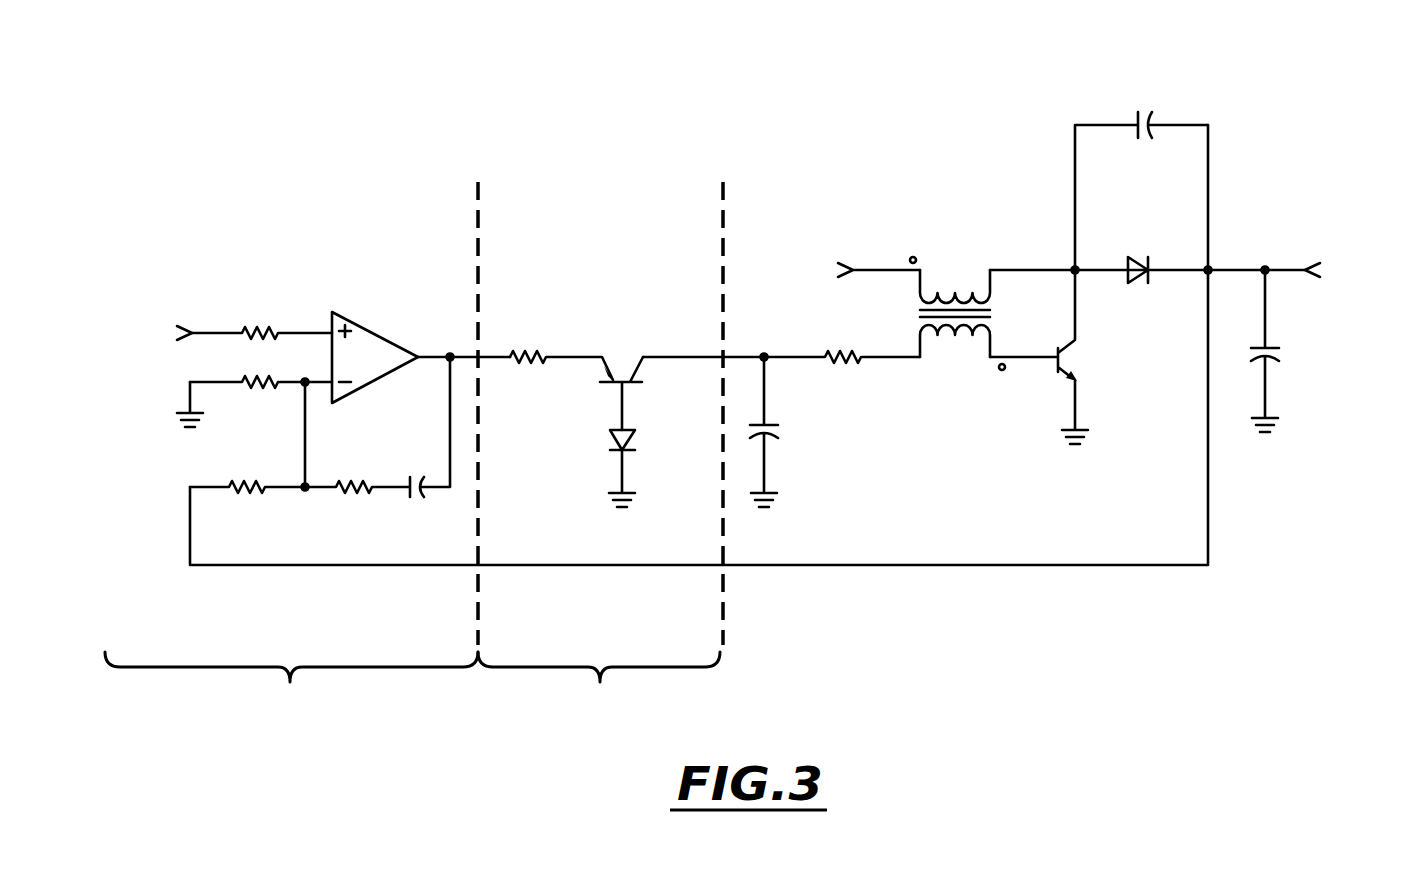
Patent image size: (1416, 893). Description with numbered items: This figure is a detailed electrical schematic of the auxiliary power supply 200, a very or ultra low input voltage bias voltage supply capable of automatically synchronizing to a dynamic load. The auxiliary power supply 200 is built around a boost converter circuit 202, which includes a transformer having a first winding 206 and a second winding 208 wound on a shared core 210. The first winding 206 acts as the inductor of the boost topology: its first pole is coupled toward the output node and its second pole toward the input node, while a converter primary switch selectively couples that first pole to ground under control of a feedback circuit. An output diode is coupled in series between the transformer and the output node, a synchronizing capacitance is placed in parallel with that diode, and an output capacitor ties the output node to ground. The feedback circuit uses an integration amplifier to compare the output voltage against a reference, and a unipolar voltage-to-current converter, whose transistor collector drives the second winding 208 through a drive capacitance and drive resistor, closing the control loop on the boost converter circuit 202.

The auxiliary power supply 200 is at (952, 676).
The boost converter circuit 202 is at (823, 133).
The first winding 206 is at (963, 267).
The second winding 208 is at (955, 343).
The core 210 is at (992, 313).